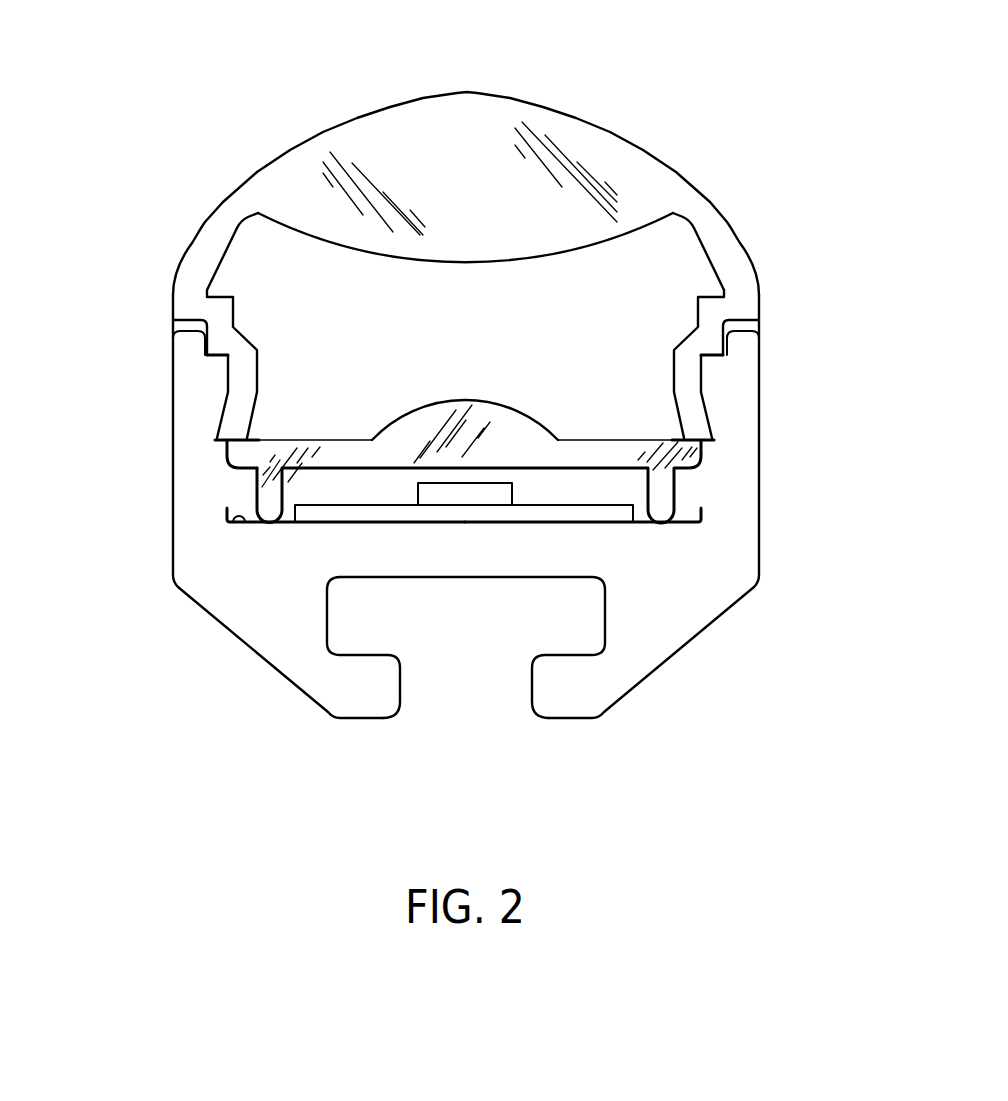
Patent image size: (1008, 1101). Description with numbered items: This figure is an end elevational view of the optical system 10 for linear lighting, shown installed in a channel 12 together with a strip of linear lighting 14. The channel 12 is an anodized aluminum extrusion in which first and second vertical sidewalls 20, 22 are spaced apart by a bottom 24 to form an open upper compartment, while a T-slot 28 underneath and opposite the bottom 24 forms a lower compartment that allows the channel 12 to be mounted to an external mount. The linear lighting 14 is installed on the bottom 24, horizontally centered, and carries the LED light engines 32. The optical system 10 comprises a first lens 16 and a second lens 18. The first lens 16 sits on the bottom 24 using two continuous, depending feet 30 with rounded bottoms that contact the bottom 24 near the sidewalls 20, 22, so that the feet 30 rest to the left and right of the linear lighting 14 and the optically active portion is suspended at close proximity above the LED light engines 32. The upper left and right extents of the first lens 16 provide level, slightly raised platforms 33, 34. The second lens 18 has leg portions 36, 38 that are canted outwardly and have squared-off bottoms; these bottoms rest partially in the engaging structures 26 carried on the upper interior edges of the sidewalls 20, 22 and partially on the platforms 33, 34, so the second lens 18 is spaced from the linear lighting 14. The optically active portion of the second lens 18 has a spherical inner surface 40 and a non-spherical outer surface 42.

The optical system 10 is at (275, 157).
The channel 12 is at (173, 479).
The linear lighting 14 is at (372, 500).
The first lens 16 is at (466, 396).
The second lens 18 is at (520, 98).
The first vertical sidewall 20 is at (188, 407).
The second vertical sidewall 22 is at (738, 433).
The bottom 24 is at (233, 523).
The engaging structure 26 is at (198, 343).
The T-slot 28 is at (480, 662).
The feet 30 is at (263, 500).
The LED light engines 32 is at (452, 498).
The platform 33 is at (250, 437).
The platform 34 is at (672, 438).
The leg portion 36 is at (251, 373).
The leg portion 38 is at (677, 372).
The inner surface 40 is at (432, 263).
The outer surface 42 is at (373, 112).